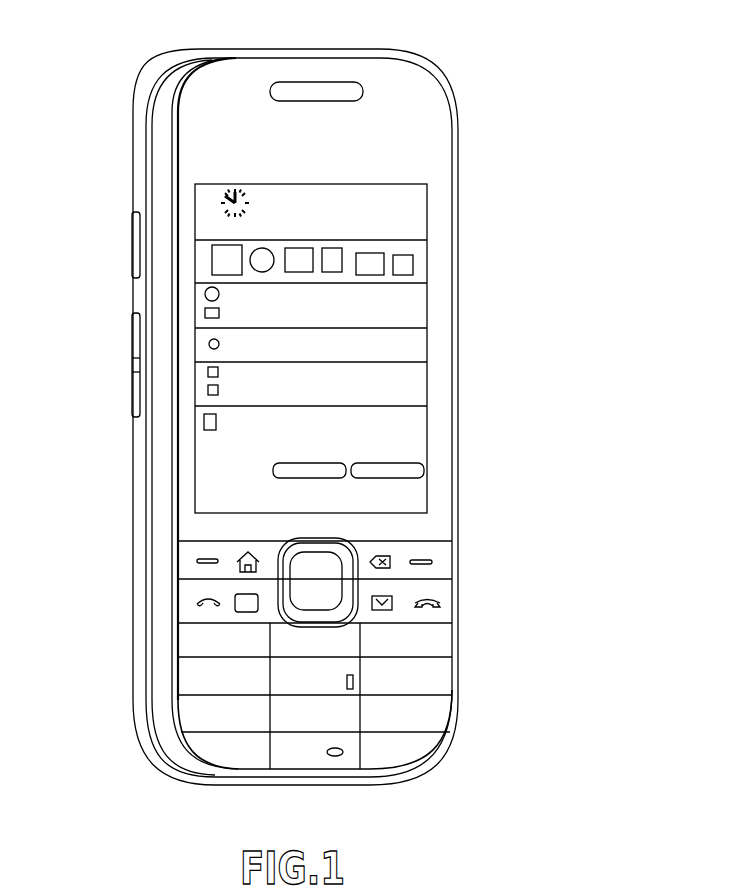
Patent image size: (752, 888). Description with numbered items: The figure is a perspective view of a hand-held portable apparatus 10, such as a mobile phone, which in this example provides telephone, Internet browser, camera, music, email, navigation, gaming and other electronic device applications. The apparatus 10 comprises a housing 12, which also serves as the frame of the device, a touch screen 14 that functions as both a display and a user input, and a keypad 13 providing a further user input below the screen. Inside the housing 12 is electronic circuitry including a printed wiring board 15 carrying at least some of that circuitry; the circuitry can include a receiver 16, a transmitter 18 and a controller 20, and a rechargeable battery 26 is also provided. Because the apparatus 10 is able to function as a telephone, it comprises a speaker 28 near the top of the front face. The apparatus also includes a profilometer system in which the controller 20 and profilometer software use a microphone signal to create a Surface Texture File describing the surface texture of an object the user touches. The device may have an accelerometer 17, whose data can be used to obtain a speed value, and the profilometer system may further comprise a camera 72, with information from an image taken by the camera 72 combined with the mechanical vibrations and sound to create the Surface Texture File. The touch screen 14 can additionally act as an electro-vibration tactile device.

The apparatus 10 is at (588, 115).
The housing 12 is at (137, 507).
The keypad 13 is at (437, 677).
The touch screen 14 is at (405, 335).
The printed wiring board 15 is at (452, 442).
The receiver 16 is at (140, 135).
The accelerometer 17 is at (425, 118).
The transmitter 18 is at (138, 172).
The controller 20 is at (138, 208).
The rechargeable battery 26 is at (140, 592).
The speaker 28 is at (323, 92).
The camera 72 is at (142, 62).